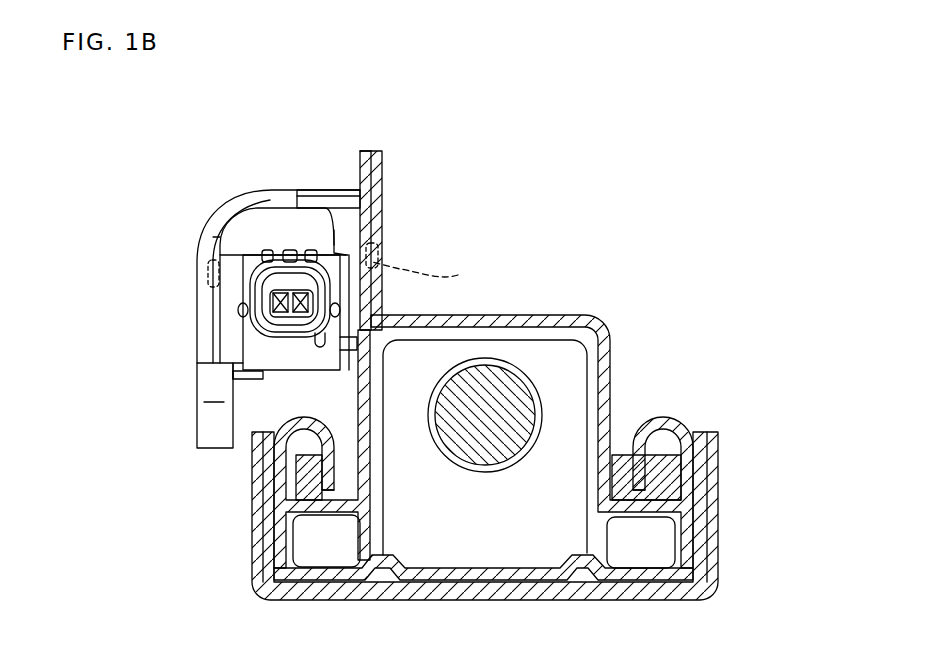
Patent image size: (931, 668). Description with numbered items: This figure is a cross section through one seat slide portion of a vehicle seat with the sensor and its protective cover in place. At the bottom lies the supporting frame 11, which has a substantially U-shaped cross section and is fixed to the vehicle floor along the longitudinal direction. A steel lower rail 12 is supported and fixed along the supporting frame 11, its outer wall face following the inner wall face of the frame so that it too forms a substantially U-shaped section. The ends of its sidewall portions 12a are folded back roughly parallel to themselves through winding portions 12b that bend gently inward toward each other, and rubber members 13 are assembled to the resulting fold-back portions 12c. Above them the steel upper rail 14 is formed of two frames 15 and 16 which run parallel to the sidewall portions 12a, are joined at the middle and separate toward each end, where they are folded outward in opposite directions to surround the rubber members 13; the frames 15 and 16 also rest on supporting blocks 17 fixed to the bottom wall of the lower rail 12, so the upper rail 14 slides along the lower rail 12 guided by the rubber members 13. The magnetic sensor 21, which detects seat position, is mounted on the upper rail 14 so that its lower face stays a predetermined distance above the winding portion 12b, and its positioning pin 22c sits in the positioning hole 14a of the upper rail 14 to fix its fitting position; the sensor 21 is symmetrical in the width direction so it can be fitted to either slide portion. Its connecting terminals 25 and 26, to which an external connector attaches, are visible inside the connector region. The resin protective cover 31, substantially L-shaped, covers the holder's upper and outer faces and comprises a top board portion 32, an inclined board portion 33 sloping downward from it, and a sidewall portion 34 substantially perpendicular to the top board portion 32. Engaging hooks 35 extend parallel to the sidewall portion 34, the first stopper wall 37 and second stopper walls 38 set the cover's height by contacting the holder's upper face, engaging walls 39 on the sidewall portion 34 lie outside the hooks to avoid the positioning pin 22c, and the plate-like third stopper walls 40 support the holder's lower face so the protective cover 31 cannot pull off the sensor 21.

The supporting frame 11 is at (258, 516).
The lower rail 12 is at (705, 428).
The sidewall portion 12a is at (258, 490).
The winding portion 12b is at (297, 422).
The fold-back portion 12c is at (336, 460).
The rubber member 13 is at (345, 506).
The upper rail 14 is at (452, 229).
The positioning hole 14a is at (441, 275).
The frame 15 is at (360, 153).
The frame 16 is at (382, 166).
The supporting block 17 is at (326, 553).
The sensor 21 is at (282, 250).
The positioning pin 22c is at (200, 268).
The connecting terminal 25 is at (247, 332).
The connecting terminal 26 is at (300, 289).
The protective cover 31 is at (264, 191).
The top board portion 32 is at (283, 196).
The inclined board portion 33 is at (252, 205).
The sidewall portion 34 is at (202, 290).
The engaging hook 35 is at (381, 345).
The first stopper wall 37 is at (334, 228).
The second stopper wall 38 is at (212, 238).
The engaging wall 39 is at (226, 338).
The third stopper wall 40 is at (250, 377).